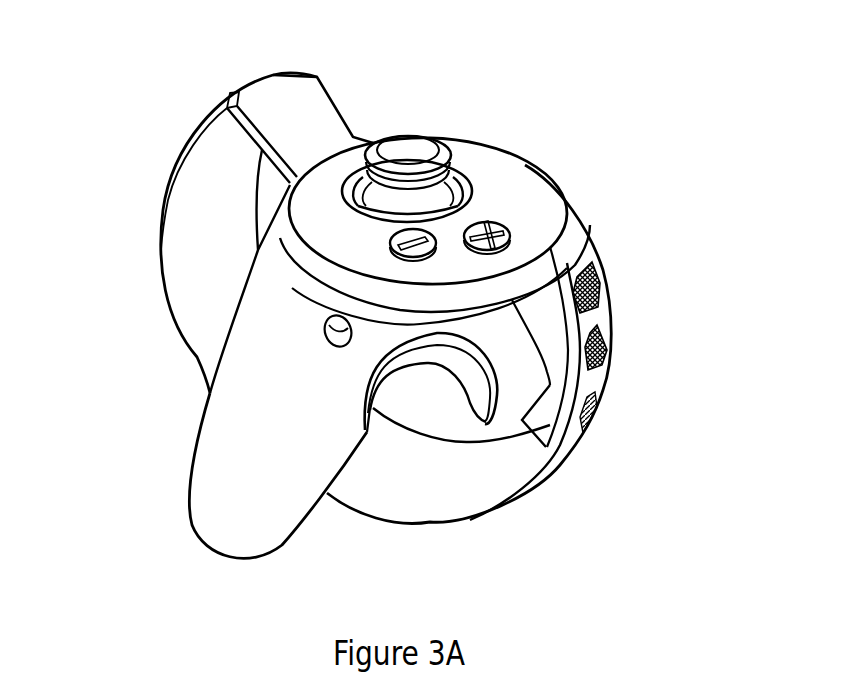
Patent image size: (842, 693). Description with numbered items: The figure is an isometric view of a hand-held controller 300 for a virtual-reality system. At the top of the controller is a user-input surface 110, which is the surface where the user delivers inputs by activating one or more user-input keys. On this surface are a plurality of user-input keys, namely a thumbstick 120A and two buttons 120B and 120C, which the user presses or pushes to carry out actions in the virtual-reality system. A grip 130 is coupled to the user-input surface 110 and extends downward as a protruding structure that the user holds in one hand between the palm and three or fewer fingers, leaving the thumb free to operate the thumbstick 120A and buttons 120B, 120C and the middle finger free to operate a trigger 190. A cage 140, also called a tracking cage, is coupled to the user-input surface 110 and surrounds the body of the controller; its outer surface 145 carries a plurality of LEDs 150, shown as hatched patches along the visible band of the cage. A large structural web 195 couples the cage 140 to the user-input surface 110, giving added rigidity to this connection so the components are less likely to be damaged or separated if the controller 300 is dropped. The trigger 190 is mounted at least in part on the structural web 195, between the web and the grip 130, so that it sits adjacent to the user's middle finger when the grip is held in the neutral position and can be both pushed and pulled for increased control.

The hand-held controller 300 is at (618, 62).
The user-input surface 110 is at (543, 223).
The thumbstick 120A is at (410, 150).
The button 120B is at (391, 248).
The button 120C is at (496, 224).
The grip 130 is at (290, 475).
The cage 140 is at (190, 177).
The outer surface 145 is at (590, 253).
The LEDs 150 is at (607, 353).
The trigger 190 is at (507, 392).
The structural web 195 is at (550, 417).